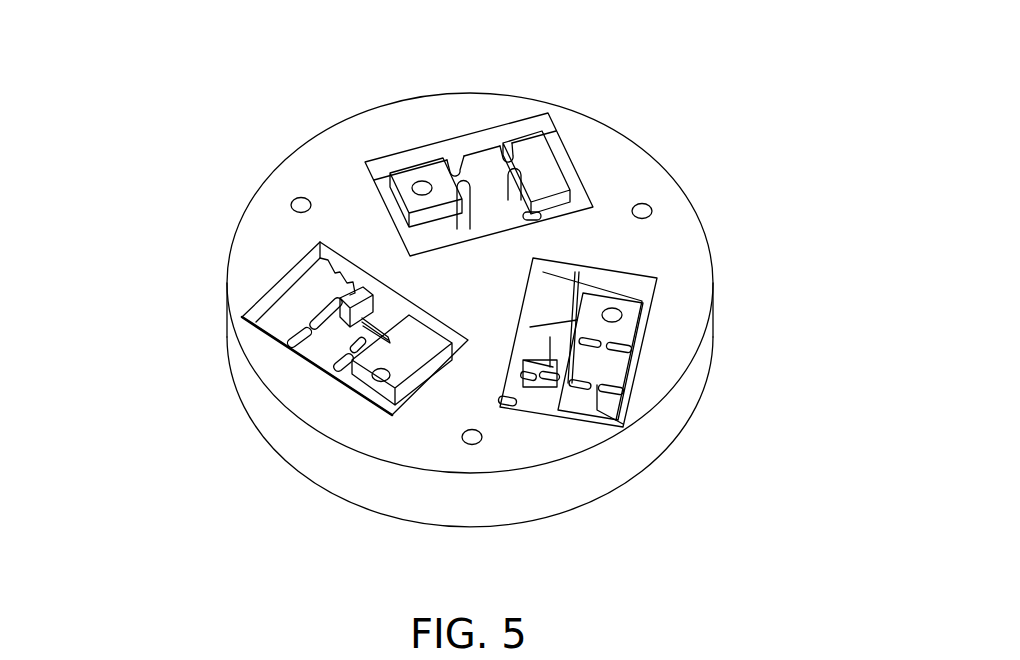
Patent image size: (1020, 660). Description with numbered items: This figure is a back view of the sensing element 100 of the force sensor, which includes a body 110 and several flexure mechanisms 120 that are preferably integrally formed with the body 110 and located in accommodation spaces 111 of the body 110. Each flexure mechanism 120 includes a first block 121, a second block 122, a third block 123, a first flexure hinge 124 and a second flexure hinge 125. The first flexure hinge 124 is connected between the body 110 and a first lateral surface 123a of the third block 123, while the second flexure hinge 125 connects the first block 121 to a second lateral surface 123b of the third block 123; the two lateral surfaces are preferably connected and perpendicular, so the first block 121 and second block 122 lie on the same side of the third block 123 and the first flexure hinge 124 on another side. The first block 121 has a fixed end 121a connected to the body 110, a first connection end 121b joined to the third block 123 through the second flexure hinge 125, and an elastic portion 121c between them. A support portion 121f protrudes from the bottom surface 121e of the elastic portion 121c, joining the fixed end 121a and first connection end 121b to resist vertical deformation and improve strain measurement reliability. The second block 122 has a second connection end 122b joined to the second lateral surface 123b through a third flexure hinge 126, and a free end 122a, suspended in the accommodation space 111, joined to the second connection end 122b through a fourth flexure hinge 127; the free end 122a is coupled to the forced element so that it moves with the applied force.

The sensing element 100 is at (162, 93).
The body 110 is at (344, 468).
The accommodation space 111 is at (366, 172).
The flexure mechanism 120 is at (401, 118).
The first block 121 is at (125, 373).
The fixed end 121a is at (380, 410).
The first connection end 121b is at (300, 330).
The elastic portion 121c is at (336, 366).
The bottom surface 121e is at (540, 350).
The support portion 121f is at (358, 346).
The second block 122 is at (828, 318).
The free end 122a is at (625, 320).
The second connection end 122b is at (615, 373).
The third block 123 is at (535, 156).
The first lateral surface 123a is at (515, 400).
The second lateral surface 123b is at (562, 162).
The first flexure hinge 124 is at (320, 240).
The second flexure hinge 125 is at (538, 212).
The third flexure hinge 126 is at (506, 158).
The fourth flexure hinge 127 is at (456, 172).